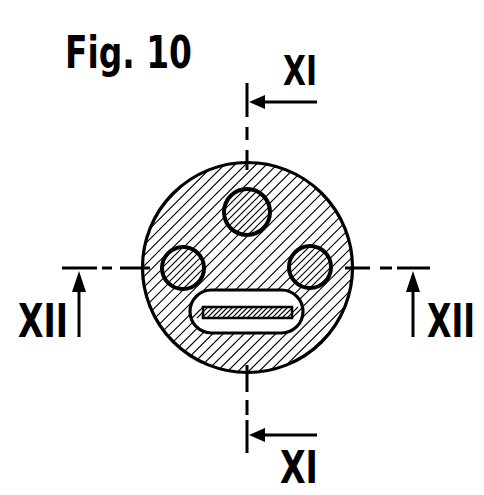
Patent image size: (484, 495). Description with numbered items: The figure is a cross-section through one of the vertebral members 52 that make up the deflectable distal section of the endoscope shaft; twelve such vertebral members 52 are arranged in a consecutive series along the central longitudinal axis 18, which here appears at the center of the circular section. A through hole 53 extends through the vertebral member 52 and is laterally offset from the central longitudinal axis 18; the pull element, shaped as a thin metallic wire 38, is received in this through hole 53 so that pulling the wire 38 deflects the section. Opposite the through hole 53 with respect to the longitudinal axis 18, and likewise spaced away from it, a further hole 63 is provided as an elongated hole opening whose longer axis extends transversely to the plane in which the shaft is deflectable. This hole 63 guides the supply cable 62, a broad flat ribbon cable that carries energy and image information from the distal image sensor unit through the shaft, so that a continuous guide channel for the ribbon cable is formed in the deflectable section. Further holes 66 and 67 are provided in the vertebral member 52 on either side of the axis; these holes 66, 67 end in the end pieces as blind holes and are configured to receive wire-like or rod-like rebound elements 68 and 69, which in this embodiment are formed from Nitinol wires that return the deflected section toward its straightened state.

The central longitudinal axis 18 is at (258, 273).
The wire 38 is at (231, 195).
The vertebral member 52 is at (355, 165).
The through hole 53 is at (264, 193).
The supply cable 62 is at (287, 320).
The hole 63 is at (211, 334).
The hole 66 is at (166, 253).
The hole 67 is at (328, 251).
The rebound element 68 is at (169, 284).
The rebound element 69 is at (326, 284).